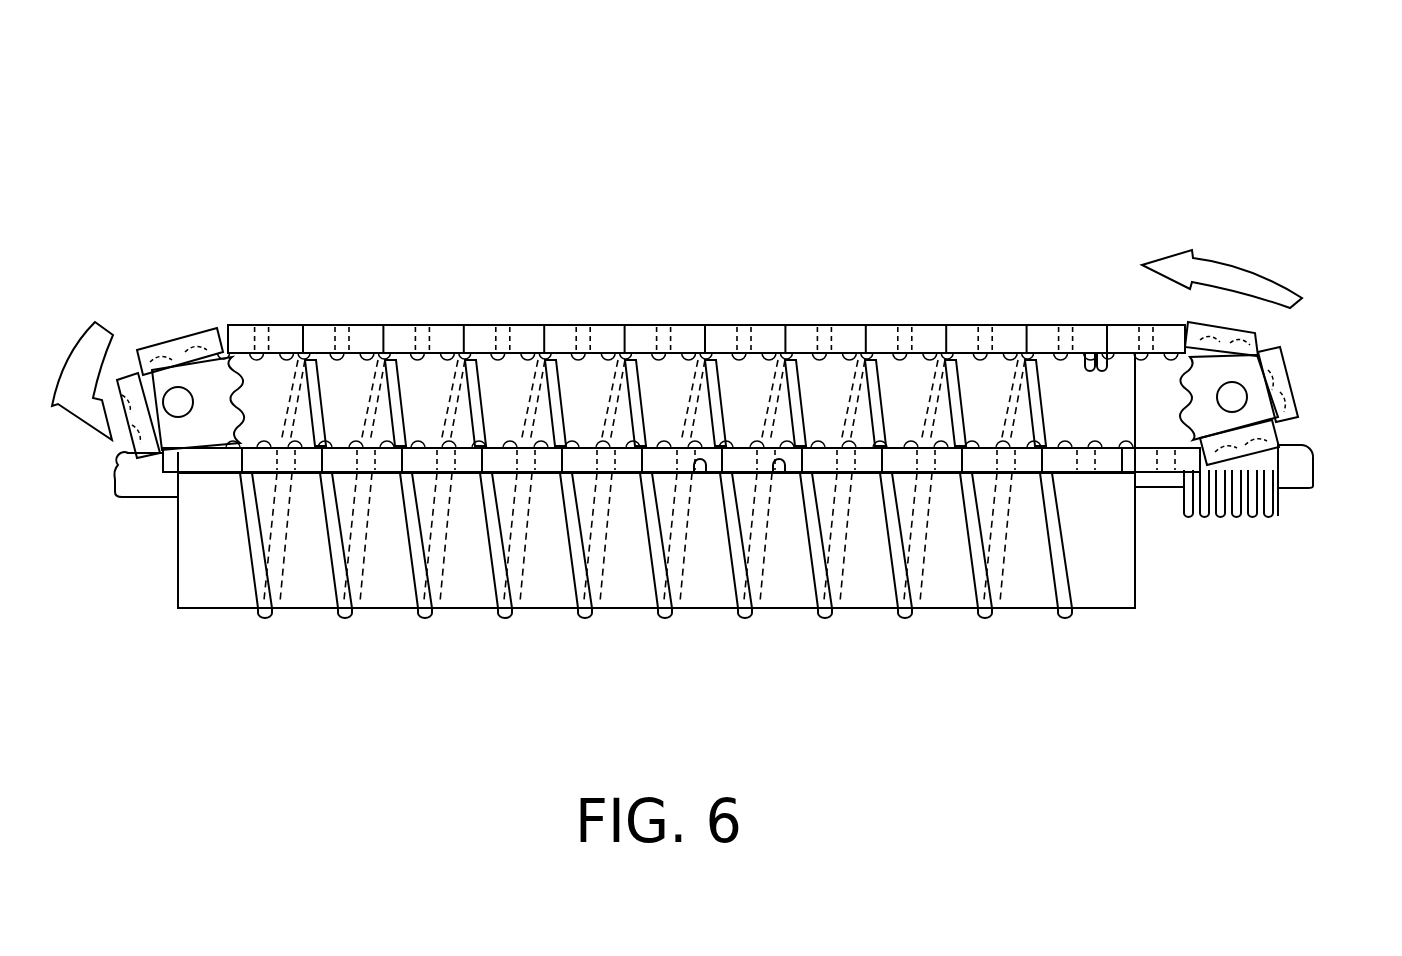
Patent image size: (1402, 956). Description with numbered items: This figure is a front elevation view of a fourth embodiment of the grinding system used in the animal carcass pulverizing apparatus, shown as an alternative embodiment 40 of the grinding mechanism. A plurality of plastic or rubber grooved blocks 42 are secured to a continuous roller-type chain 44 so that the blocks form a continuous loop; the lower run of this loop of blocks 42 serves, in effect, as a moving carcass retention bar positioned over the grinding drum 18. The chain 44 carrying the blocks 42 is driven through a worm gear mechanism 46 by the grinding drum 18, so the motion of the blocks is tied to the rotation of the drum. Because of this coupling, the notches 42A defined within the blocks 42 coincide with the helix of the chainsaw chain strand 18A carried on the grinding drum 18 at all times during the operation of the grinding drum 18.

The alternative embodiment of the grinding mechanism 40 is at (715, 386).
The grooved blocks 42 is at (362, 323).
The notches 42A is at (828, 332).
The continuous roller-type chain 44 is at (1086, 352).
The grinding drum 18 is at (177, 583).
The chainsaw chain strand 18A is at (262, 618).
The worm gear mechanism 46 is at (1278, 516).